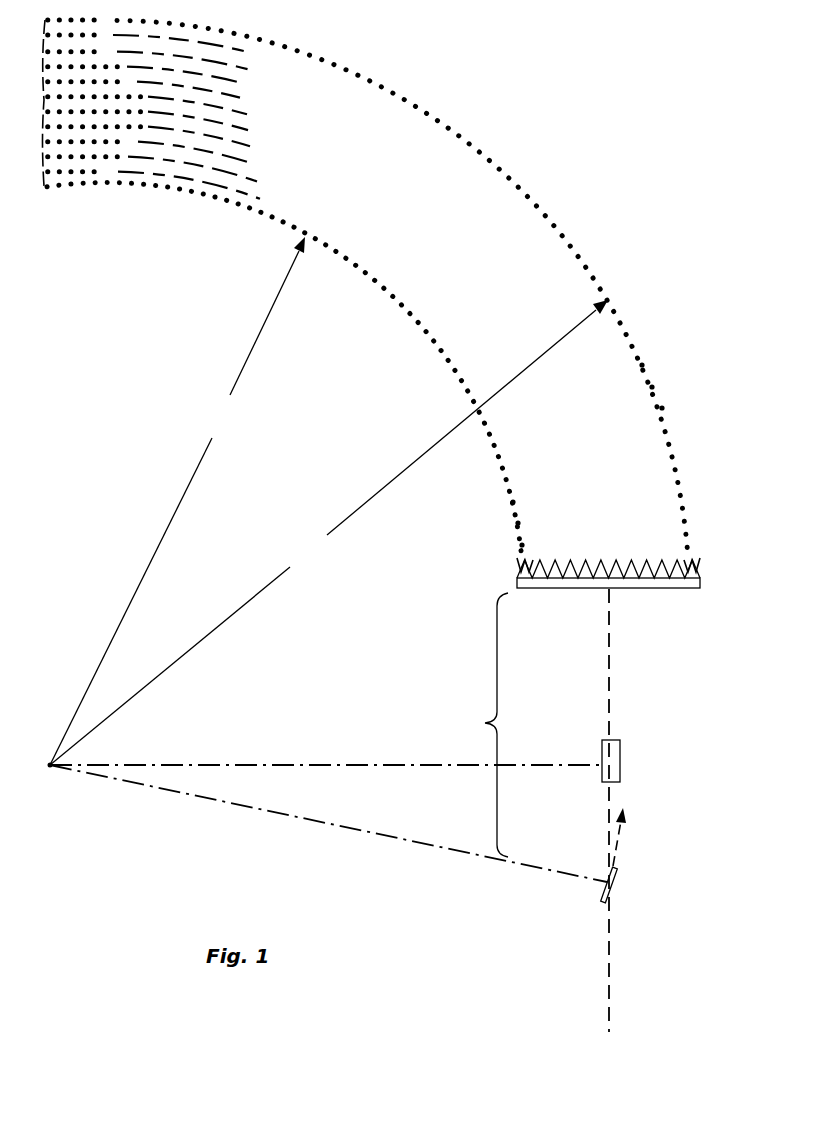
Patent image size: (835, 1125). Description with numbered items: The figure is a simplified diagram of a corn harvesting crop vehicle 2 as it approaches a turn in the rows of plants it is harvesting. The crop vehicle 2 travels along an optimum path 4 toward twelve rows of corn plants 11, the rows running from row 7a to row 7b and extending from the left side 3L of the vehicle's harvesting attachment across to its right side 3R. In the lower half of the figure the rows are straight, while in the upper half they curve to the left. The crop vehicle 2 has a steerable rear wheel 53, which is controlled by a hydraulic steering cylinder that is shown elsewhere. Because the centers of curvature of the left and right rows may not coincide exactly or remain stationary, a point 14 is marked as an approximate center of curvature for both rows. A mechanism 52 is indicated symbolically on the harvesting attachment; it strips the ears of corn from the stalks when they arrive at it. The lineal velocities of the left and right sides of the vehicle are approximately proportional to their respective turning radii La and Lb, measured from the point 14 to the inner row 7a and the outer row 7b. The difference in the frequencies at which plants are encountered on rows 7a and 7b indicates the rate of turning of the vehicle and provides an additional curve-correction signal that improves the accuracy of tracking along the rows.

The point 14 is at (50, 767).
The row 7a is at (442, 353).
The row 7b is at (583, 260).
The corn plants 11 is at (522, 545).
The mechanism 52 is at (690, 589).
The left side 3L is at (517, 570).
The right side 3R is at (700, 568).
The crop vehicle 2 is at (470, 725).
The optimum path 4 is at (612, 965).
The steerable rear wheel 53 is at (617, 873).
The turning radius La is at (177, 501).
The turning radius Lb is at (329, 532).